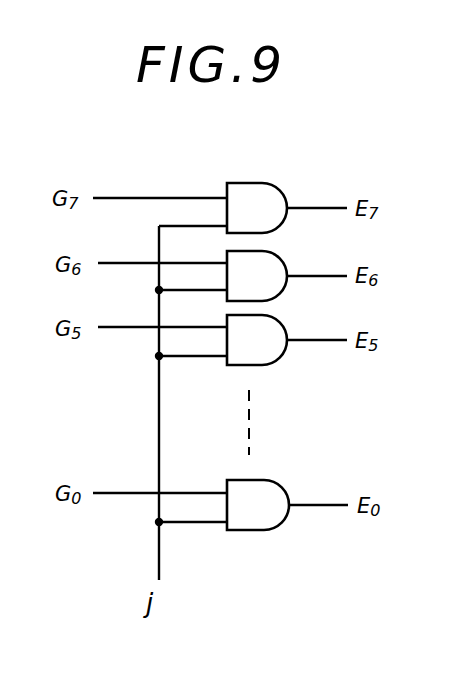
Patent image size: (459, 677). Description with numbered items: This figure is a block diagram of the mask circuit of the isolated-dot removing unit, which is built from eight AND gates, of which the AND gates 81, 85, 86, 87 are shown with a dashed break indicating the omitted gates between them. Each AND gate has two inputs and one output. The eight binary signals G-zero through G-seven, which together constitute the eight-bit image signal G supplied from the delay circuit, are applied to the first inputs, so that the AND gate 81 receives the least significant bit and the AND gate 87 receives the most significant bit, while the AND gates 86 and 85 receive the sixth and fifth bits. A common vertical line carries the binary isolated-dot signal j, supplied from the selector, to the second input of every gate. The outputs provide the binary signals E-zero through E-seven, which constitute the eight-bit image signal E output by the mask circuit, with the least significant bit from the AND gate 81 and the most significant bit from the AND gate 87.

The AND gate 87 is at (262, 183).
The AND gate 86 is at (271, 251).
The AND gate 85 is at (277, 316).
The AND gate 81 is at (267, 480).